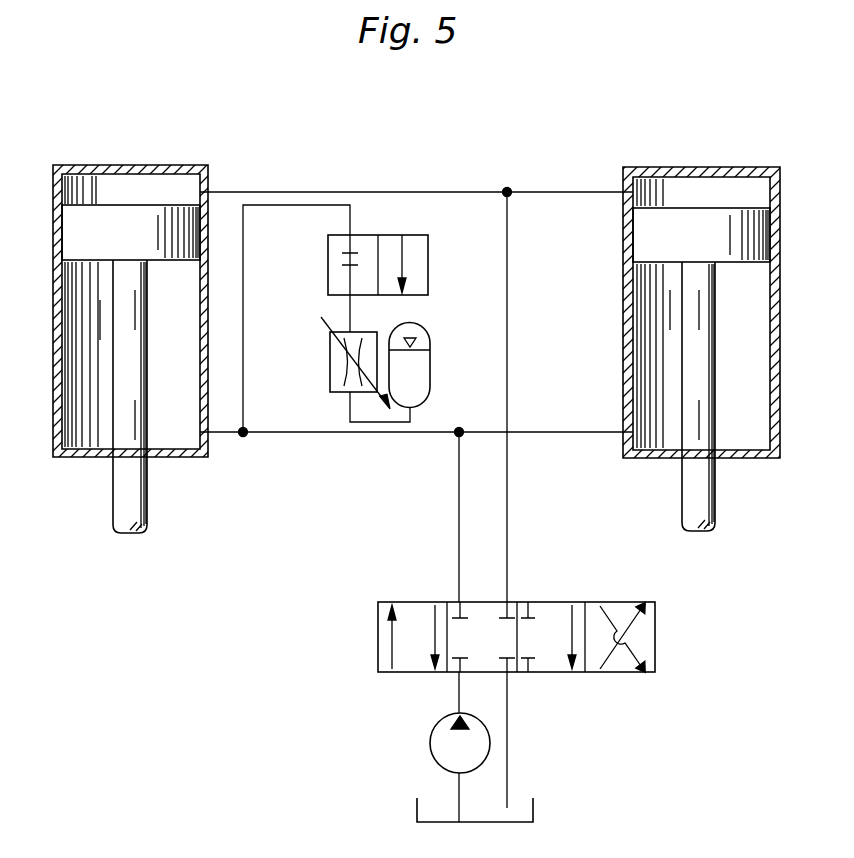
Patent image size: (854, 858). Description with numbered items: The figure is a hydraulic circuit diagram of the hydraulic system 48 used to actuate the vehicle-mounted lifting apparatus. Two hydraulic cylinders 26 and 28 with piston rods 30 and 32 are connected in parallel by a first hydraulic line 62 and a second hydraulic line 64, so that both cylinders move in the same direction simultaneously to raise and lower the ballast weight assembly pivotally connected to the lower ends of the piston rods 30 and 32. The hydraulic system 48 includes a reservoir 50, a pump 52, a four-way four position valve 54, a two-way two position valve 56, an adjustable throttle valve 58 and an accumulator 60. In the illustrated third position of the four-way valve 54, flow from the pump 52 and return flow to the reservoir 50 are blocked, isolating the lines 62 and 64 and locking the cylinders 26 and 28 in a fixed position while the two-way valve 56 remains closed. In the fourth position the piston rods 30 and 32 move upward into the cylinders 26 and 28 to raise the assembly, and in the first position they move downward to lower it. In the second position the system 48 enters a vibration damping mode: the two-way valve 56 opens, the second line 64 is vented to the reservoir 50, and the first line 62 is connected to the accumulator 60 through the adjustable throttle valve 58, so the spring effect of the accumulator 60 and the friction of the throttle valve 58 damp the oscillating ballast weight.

The hydraulic cylinder 26 is at (93, 460).
The hydraulic cylinder 28 is at (745, 458).
The piston rod 30 is at (148, 498).
The piston rod 32 is at (681, 505).
The hydraulic system 48 is at (437, 152).
The reservoir 50 is at (535, 805).
The pump 52 is at (432, 741).
The four-way four position valve 54 is at (655, 635).
The two-way two position valve 56 is at (388, 234).
The adjustable throttle valve 58 is at (330, 362).
The accumulator 60 is at (431, 366).
The first hydraulic line 62 is at (329, 434).
The second hydraulic line 64 is at (459, 192).